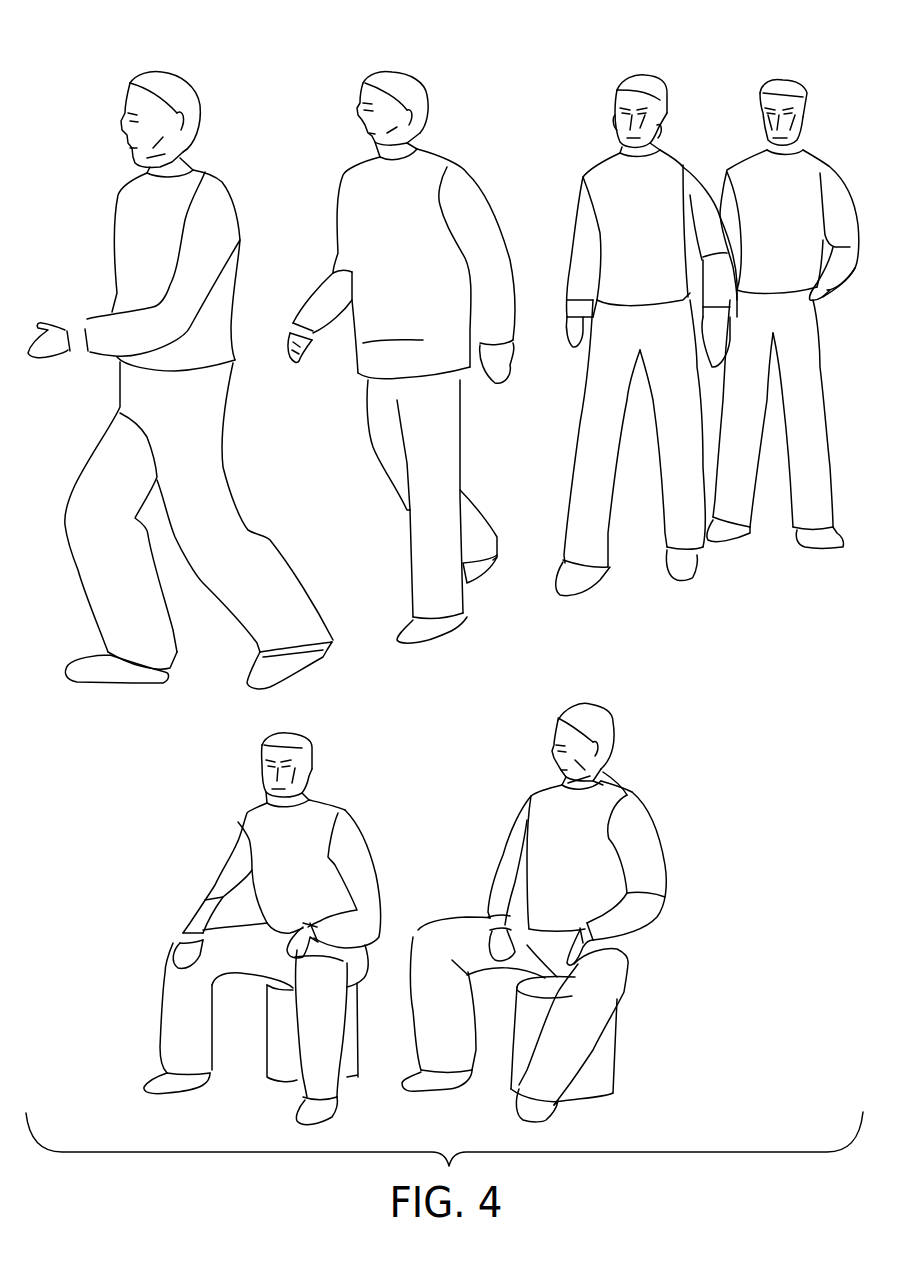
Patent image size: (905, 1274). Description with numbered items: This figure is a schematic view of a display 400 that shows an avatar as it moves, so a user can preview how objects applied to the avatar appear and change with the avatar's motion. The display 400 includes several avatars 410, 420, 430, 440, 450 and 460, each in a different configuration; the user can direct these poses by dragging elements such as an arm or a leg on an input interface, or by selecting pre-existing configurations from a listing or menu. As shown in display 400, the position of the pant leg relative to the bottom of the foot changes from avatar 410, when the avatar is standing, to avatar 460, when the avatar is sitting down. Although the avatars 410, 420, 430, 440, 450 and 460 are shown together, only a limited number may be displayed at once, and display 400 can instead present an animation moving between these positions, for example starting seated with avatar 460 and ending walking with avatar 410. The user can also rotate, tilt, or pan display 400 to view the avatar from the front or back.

The display 400 is at (707, 703).
The avatar 410 is at (138, 80).
The avatar 420 is at (405, 80).
The avatar 430 is at (632, 80).
The avatar 440 is at (773, 87).
The avatar 450 is at (240, 844).
The avatar 460 is at (585, 722).